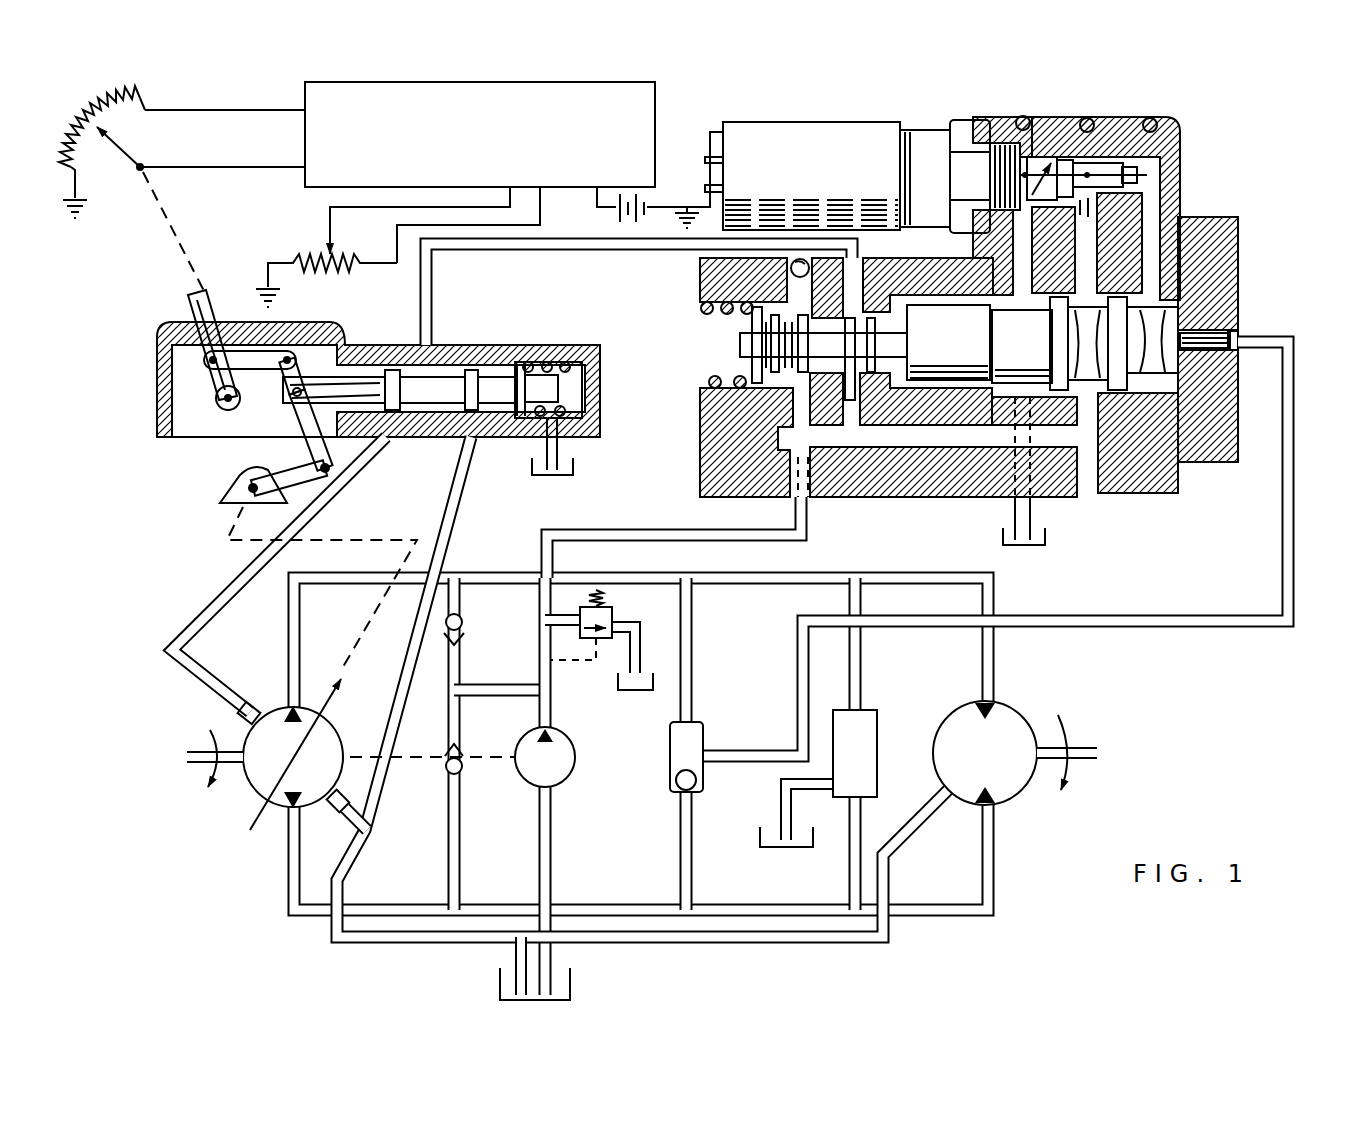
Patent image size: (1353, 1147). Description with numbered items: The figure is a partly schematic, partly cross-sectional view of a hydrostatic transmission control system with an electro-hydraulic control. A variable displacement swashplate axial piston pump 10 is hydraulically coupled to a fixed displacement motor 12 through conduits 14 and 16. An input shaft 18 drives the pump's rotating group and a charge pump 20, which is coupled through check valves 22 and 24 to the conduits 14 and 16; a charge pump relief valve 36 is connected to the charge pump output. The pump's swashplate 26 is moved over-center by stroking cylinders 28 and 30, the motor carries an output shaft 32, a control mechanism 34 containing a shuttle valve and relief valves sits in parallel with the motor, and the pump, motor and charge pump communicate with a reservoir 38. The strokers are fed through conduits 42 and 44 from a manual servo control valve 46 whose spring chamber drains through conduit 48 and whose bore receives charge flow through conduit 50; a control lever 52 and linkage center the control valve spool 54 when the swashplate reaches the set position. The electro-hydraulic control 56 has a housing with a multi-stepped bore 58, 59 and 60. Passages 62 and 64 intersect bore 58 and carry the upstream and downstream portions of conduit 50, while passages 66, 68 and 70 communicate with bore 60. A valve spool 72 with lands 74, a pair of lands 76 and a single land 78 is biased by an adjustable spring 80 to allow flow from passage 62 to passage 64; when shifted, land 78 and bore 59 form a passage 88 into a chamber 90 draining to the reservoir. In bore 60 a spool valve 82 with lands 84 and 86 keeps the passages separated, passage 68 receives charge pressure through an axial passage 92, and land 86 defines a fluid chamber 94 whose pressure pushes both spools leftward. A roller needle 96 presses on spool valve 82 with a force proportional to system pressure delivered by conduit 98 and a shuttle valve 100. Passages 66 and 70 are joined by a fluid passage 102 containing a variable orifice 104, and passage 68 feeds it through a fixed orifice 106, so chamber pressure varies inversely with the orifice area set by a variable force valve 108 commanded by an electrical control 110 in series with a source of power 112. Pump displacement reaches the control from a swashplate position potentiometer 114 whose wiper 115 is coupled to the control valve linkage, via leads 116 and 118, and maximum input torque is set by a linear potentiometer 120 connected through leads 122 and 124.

The variable displacement swashplate axial piston pump 10 is at (245, 800).
The fixed displacement motor 12 is at (1029, 705).
The conduit 14 is at (812, 577).
The conduit 16 is at (731, 907).
The input shaft 18 is at (200, 752).
The charge pump 20 is at (580, 757).
The check valve 22 is at (467, 626).
The check valve 24 is at (468, 768).
The swashplate 26 is at (331, 707).
The stroking cylinder 28 is at (254, 703).
The stroking cylinder 30 is at (338, 819).
The output shaft 32 is at (1082, 748).
The control mechanism 34 is at (873, 746).
The charge pump relief valve 36 is at (615, 608).
The reservoir 38 is at (572, 983).
The conduit 42 is at (340, 481).
The conduit 44 is at (456, 492).
The manual servo control valve 46 is at (460, 341).
The conduit 48 is at (556, 450).
The conduit 50 is at (572, 245).
The control lever 52 is at (183, 305).
The control valve spool 54 is at (415, 437).
The electro-hydraulic control 56 is at (949, 282).
The bore 58 is at (885, 373).
The bore 59 is at (942, 385).
The bore 60 is at (1167, 391).
The passage 62 is at (797, 403).
The passage 64 is at (852, 284).
The passage 66 is at (1021, 280).
The passage 68 is at (1087, 280).
The passage 70 is at (1160, 243).
The valve spool 72 is at (751, 353).
The land 74 is at (768, 308).
The land 76 is at (838, 378).
The land 78 is at (948, 342).
The adjustable spring 80 is at (708, 318).
The spool valve 82 is at (1156, 331).
The land 84 is at (1060, 342).
The land 86 is at (1117, 337).
The passage 88 is at (942, 303).
The chamber 90 is at (1018, 303).
The axial passage 92 is at (903, 438).
The fluid chamber 94 is at (1185, 298).
The roller needle 96 is at (1193, 353).
The conduit 98 is at (1200, 616).
The shuttle valve 100 is at (706, 735).
The fluid passage 102 is at (1104, 176).
The variable orifice 104 is at (1040, 166).
The fixed orifice 106 is at (1092, 205).
The variable force valve 108 is at (806, 117).
The electrical control 110 is at (666, 97).
The source of power 112 is at (607, 216).
The swashplate position potentiometer 114 is at (113, 178).
The wiper 115 is at (124, 151).
The lead 116 is at (210, 109).
The lead 118 is at (225, 165).
The linear potentiometer 120 is at (302, 256).
The lead 122 is at (330, 207).
The lead 124 is at (415, 224).